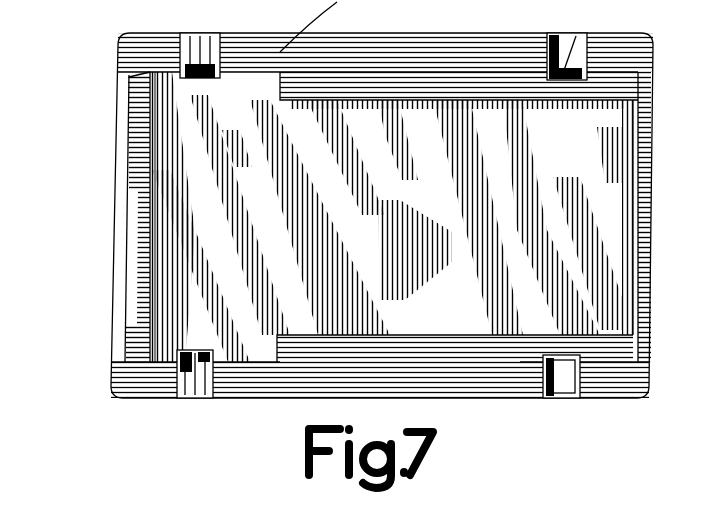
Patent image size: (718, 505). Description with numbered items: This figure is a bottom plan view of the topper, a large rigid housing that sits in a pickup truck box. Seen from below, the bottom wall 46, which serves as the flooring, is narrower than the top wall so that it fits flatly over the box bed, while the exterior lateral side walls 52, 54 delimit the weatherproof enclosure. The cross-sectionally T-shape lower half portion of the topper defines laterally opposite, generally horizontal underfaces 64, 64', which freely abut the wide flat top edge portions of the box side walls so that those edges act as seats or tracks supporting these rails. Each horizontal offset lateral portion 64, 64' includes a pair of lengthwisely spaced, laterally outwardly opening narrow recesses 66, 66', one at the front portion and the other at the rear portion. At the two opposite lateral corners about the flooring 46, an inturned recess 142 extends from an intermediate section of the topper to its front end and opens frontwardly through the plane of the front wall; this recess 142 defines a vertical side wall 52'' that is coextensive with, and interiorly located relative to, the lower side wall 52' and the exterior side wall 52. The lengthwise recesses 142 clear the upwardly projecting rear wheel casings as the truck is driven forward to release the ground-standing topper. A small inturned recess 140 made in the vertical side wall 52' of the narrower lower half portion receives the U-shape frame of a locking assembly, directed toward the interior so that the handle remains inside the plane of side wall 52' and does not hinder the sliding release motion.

The inturned recess 140 is at (198, 36).
The narrow recess 66 is at (331, 200).
The lateral side wall 54 is at (274, 38).
The horizontal underface 64 is at (459, 50).
The narrow recess 66' is at (594, 44).
The inturned recess 142 is at (652, 80).
The bottom wall 46 is at (398, 215).
The vertical side wall 52'' is at (400, 343).
The horizontal underface 64' is at (485, 357).
The lateral side wall 52 is at (601, 386).
The side wall 52' is at (165, 387).